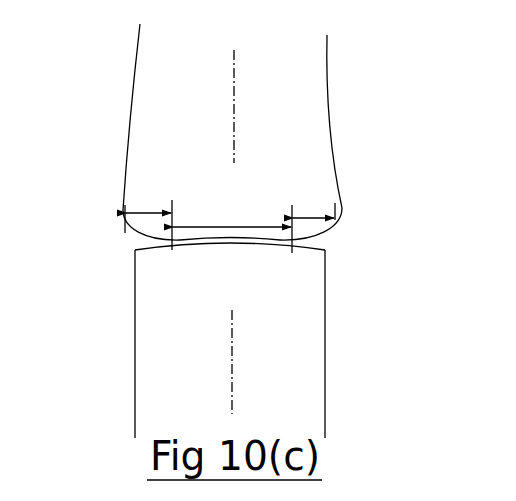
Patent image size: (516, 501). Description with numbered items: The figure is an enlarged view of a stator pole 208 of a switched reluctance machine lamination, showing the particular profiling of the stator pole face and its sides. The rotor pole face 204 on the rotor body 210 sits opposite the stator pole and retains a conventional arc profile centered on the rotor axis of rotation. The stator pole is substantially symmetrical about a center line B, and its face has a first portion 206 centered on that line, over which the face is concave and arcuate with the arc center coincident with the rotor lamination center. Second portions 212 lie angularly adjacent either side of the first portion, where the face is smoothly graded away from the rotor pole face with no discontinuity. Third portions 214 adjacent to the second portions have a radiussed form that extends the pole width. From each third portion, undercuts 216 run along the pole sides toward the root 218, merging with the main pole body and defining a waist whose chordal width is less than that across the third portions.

The rotor pole face 204 is at (272, 247).
The first portion 206 is at (232, 210).
The stator pole 208 is at (182, 66).
The lower member 210 is at (255, 303).
The second portions 212 is at (150, 214).
The third portions 214 is at (125, 215).
The undercuts 216 is at (130, 133).
The root 218 is at (228, 25).